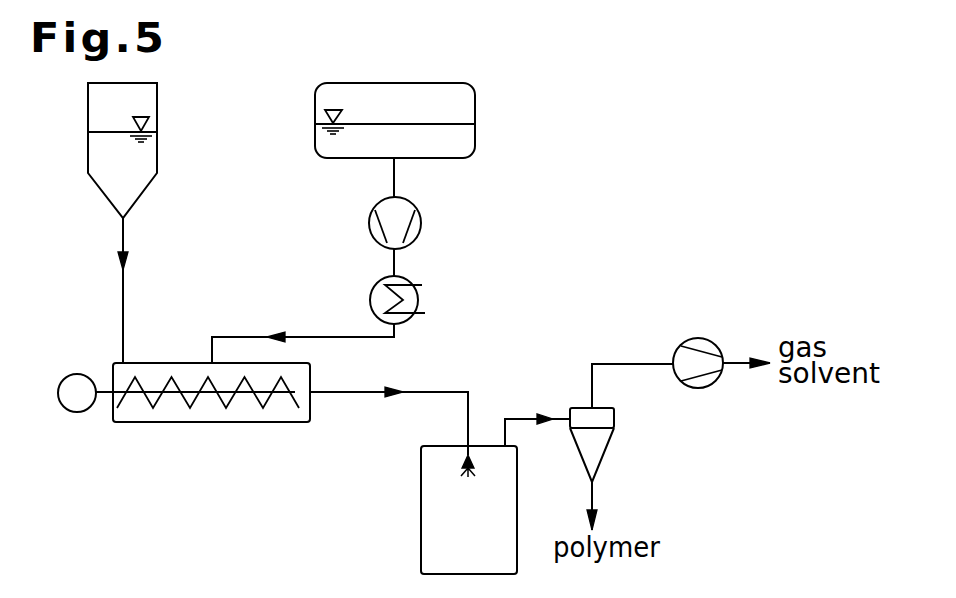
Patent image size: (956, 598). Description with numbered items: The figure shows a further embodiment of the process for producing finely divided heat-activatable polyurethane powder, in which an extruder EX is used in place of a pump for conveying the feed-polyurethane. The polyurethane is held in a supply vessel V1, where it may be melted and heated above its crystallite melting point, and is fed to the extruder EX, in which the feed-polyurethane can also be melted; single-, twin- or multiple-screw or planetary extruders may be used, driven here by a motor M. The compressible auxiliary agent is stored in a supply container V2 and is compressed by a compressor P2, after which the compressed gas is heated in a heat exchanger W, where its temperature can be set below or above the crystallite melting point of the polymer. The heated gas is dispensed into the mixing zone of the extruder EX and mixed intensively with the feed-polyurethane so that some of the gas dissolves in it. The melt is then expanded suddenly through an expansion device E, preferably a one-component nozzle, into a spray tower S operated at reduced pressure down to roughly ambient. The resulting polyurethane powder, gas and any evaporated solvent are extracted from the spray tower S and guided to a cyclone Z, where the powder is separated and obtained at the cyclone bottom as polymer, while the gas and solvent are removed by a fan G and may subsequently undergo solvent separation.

The supply vessel V1 is at (101, 150).
The supply container V2 is at (416, 120).
The compressor P2 is at (375, 223).
The heat exchanger W is at (380, 300).
The mixing station M is at (77, 393).
The extruder EX is at (203, 413).
The spray tower S is at (455, 510).
The expansion device E is at (467, 482).
The cyclone Z is at (604, 469).
The fan G is at (698, 347).